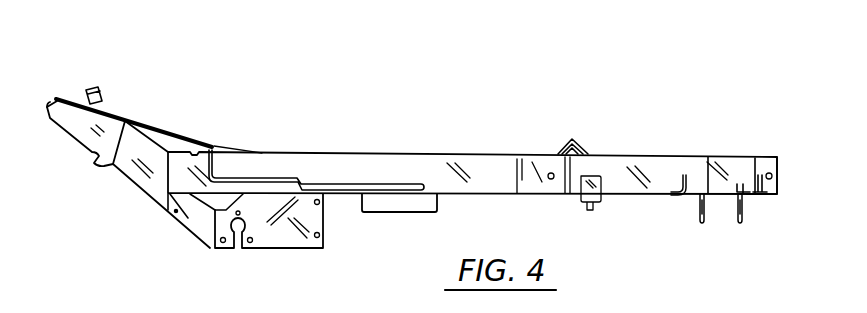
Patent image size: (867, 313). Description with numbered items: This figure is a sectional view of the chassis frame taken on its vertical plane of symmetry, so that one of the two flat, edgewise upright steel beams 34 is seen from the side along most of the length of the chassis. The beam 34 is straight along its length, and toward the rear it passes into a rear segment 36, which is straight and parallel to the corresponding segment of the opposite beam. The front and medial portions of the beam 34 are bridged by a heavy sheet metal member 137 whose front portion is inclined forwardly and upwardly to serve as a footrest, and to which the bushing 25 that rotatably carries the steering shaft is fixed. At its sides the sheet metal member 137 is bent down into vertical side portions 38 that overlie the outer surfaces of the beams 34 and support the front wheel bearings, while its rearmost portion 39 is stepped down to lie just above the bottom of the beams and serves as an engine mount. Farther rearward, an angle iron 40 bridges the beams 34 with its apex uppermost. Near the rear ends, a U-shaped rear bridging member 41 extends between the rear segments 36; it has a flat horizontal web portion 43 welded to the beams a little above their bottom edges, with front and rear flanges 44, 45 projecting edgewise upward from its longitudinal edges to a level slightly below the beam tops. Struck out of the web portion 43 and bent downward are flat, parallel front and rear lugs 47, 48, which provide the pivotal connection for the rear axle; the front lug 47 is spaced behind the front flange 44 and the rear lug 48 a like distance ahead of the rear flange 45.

The bushing 25 is at (93, 99).
The sheet metal member 137 is at (142, 116).
The beams 34 is at (455, 152).
The rear segments 36 is at (777, 158).
The vertical side portions 38 is at (196, 220).
The rearmost portion 39 is at (368, 181).
The angle iron 40 is at (572, 139).
The rear bridging member 41 is at (740, 186).
The web portion 43 is at (709, 190).
The front flange 44 is at (672, 174).
The rear flange 45 is at (763, 190).
The front lug 47 is at (699, 213).
The rear lug 48 is at (744, 215).